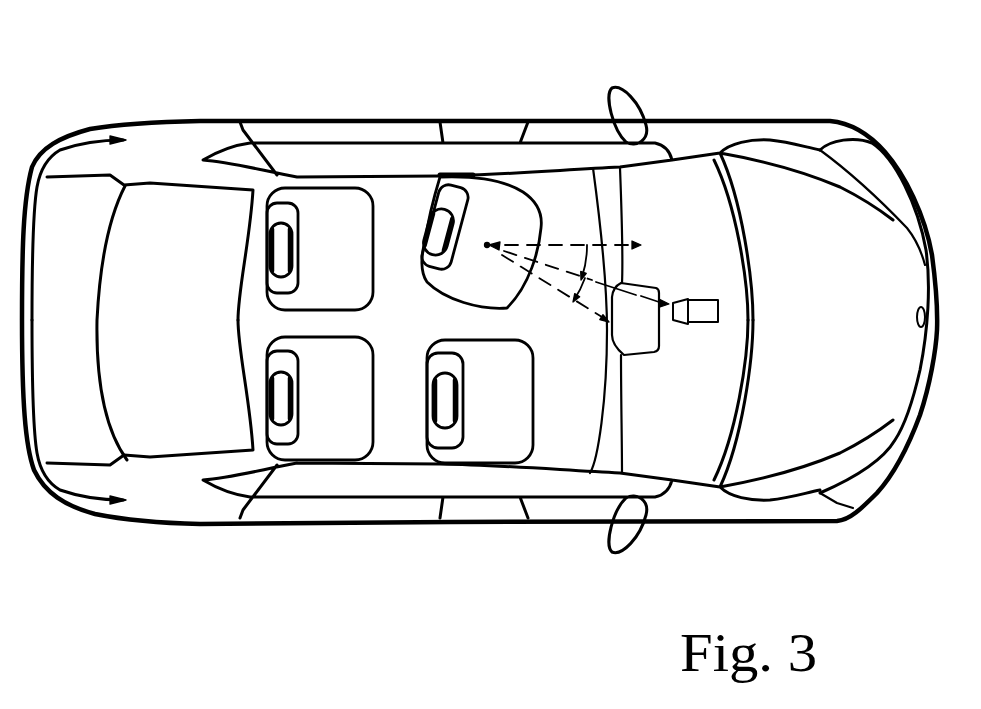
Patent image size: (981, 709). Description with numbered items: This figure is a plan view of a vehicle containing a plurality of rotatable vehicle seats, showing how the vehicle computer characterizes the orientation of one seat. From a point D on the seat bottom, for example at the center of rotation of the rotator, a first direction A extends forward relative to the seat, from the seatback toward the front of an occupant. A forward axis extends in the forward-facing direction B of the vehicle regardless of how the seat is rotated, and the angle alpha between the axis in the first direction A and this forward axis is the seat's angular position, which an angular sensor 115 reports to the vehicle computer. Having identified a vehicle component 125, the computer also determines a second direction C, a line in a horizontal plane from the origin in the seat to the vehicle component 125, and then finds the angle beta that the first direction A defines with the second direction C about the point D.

The sensor 115 is at (703, 300).
The vehicle component 125 is at (609, 322).
The first direction A is at (638, 294).
The forward-facing direction B is at (573, 243).
The second direction C is at (558, 290).
The point D is at (491, 238).